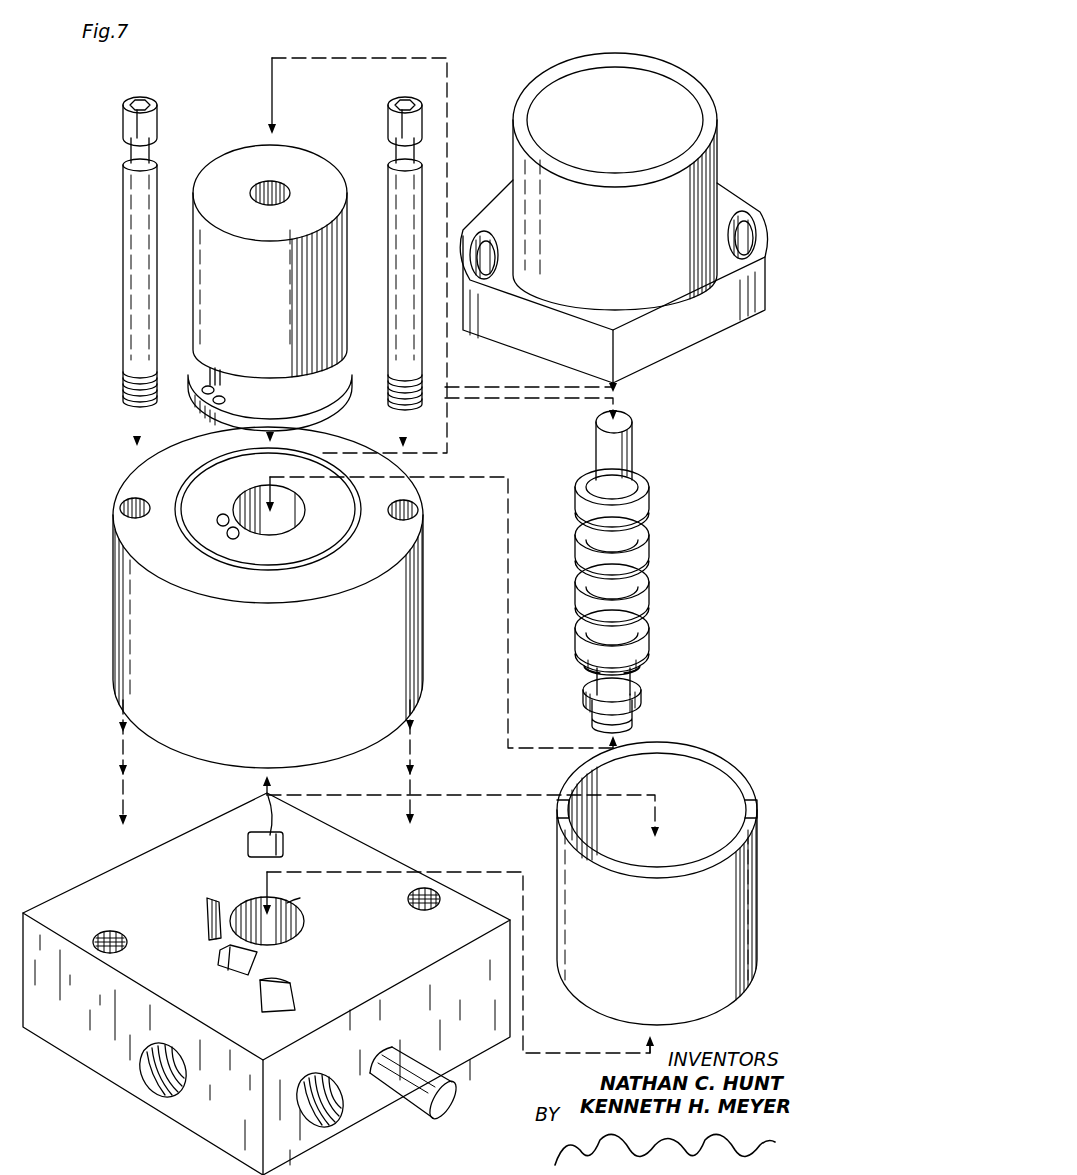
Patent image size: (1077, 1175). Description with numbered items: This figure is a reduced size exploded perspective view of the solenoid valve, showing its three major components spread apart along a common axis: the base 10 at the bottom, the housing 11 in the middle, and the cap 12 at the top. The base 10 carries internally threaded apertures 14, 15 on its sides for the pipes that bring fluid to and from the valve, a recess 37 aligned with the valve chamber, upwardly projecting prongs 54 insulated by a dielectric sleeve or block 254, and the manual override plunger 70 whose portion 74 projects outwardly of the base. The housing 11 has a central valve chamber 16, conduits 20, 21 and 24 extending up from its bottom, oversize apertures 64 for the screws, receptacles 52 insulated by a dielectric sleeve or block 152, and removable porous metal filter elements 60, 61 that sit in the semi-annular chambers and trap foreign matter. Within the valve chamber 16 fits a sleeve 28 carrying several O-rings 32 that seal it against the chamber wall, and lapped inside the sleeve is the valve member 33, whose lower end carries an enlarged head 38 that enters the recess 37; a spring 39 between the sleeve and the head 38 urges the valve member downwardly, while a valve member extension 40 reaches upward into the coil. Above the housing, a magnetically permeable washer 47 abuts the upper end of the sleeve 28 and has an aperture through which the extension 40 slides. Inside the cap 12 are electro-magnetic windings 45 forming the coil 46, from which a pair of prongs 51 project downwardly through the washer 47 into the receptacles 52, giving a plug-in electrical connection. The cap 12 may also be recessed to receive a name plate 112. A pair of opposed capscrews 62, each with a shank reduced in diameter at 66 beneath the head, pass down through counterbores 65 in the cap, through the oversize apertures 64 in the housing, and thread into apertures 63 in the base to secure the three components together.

The base 10 is at (270, 977).
The housing 11 is at (267, 597).
The cap 12 is at (613, 216).
The internally threaded aperture 14 is at (165, 1092).
The internally threaded aperture 15 is at (340, 1103).
The central valve chamber 16 is at (252, 498).
The conduit 20 is at (268, 796).
The conduit 21 is at (273, 978).
The conduit 24 is at (233, 947).
The sleeve 28 is at (627, 570).
The O-rings 32 is at (578, 527).
The valve member 33 is at (650, 697).
The recess 37 is at (300, 898).
The enlarged head 38 is at (605, 705).
The spring 39 is at (640, 667).
The valve member extension 40 is at (634, 458).
The electro-magnetic windings 45 is at (197, 300).
The coil 46 is at (254, 282).
The washer 47 is at (254, 379).
The prongs 51 is at (203, 393).
The receptacles 52 is at (228, 536).
The prongs 54 is at (213, 903).
The filter element 60 is at (675, 871).
The filter element 61 is at (748, 910).
The capscrews 62 is at (125, 228).
The apertures 63 is at (117, 932).
The oversize apertures 64 is at (135, 498).
The counterbores 65 is at (488, 235).
The reduced diameter shank portion 66 is at (133, 150).
The plunger 70 is at (470, 1092).
The projecting portion 74 is at (417, 1093).
The name plate 112 is at (642, 103).
The dielectric sleeve or block 152 is at (219, 518).
The dielectric sleeve or block 254 is at (206, 926).